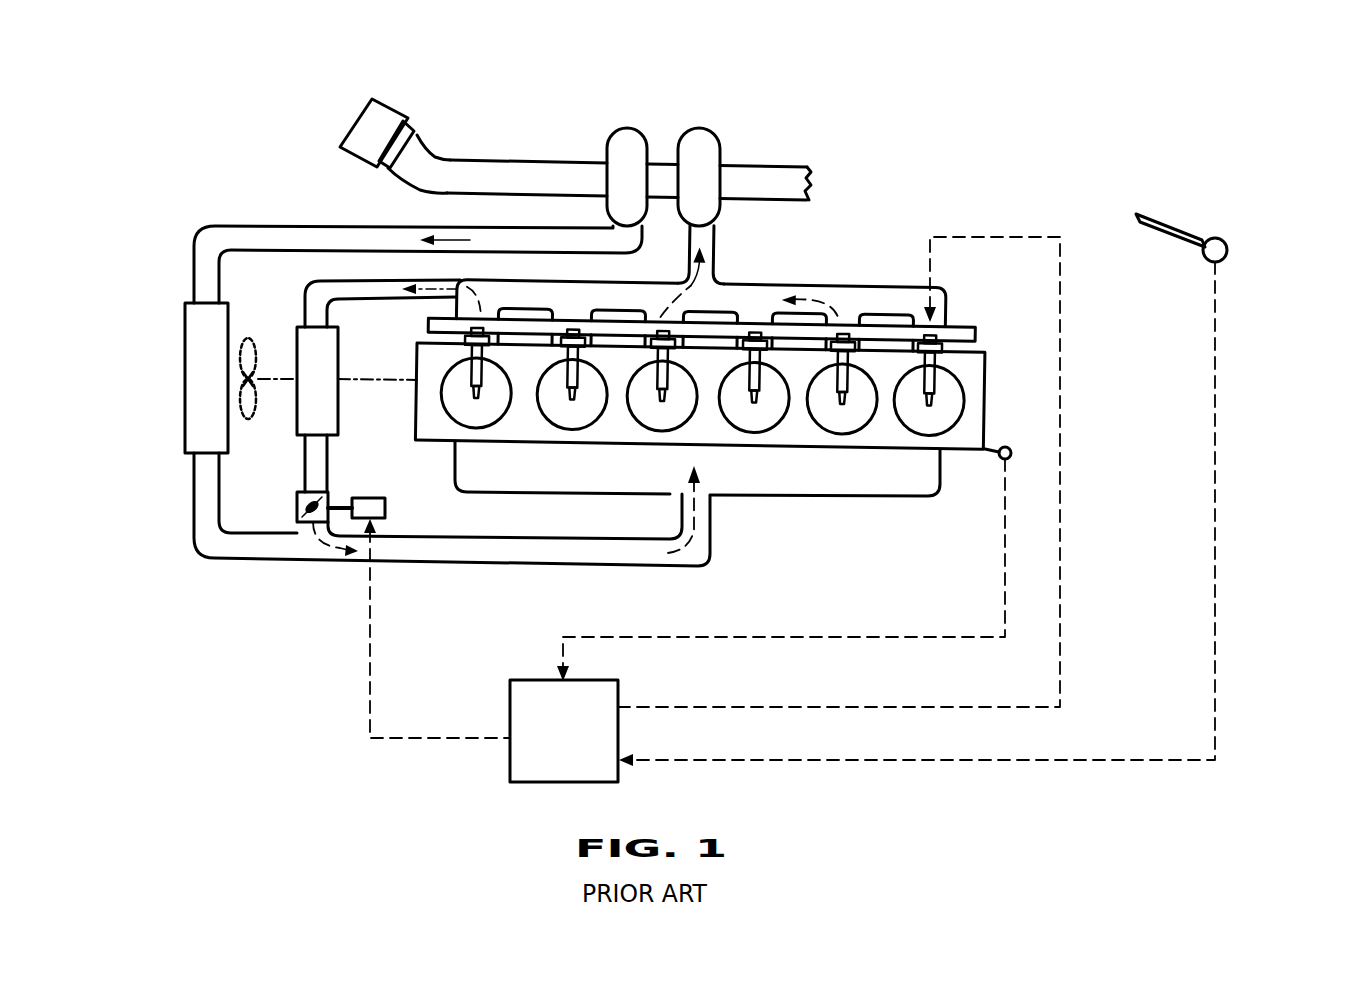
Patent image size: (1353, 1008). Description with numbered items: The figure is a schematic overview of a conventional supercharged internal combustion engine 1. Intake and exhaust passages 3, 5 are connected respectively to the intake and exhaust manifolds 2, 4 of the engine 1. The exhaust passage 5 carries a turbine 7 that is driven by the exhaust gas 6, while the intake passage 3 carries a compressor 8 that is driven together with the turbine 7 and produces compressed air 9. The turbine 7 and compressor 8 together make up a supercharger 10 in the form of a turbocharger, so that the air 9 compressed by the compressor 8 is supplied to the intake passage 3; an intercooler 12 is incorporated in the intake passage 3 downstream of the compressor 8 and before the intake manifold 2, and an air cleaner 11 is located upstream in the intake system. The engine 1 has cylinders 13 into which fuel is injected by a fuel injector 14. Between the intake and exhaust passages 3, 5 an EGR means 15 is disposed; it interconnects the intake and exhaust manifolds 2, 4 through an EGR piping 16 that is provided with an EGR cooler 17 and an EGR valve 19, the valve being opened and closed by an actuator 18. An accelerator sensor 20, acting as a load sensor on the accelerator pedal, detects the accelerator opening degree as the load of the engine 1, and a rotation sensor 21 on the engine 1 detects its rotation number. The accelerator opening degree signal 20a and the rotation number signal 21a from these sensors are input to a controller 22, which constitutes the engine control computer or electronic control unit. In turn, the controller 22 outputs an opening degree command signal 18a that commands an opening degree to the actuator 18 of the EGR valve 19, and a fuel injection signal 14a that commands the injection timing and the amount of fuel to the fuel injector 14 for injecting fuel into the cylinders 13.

The supercharged internal combustion engine 1 is at (814, 272).
The intake manifold 2 is at (820, 482).
The intake passage 3 is at (463, 556).
The exhaust manifold 4 is at (880, 288).
The exhaust passage 5 is at (713, 236).
The exhaust gas 6 is at (672, 298).
The turbine 7 is at (707, 148).
The compressor 8 is at (620, 148).
The compressed air 9 is at (457, 237).
The supercharger 10 is at (667, 124).
The air cleaner 11 is at (388, 118).
The intercooler 12 is at (200, 384).
The cylinders 13 is at (500, 407).
The fuel injector 14 is at (962, 316).
The fuel injection signal 14a is at (1003, 237).
The EGR means 15 is at (284, 471).
The EGR piping 16 is at (313, 307).
The EGR cooler 17 is at (310, 347).
The actuator 18 is at (385, 498).
The opening degree command signal 18a is at (369, 658).
The EGR valve 19 is at (312, 492).
The accelerator sensor 20 is at (1225, 240).
The accelerator opening degree signal 20a is at (1222, 372).
The rotation sensor 21 is at (998, 463).
The rotation number signal 21a is at (877, 635).
The controller 22 is at (586, 744).